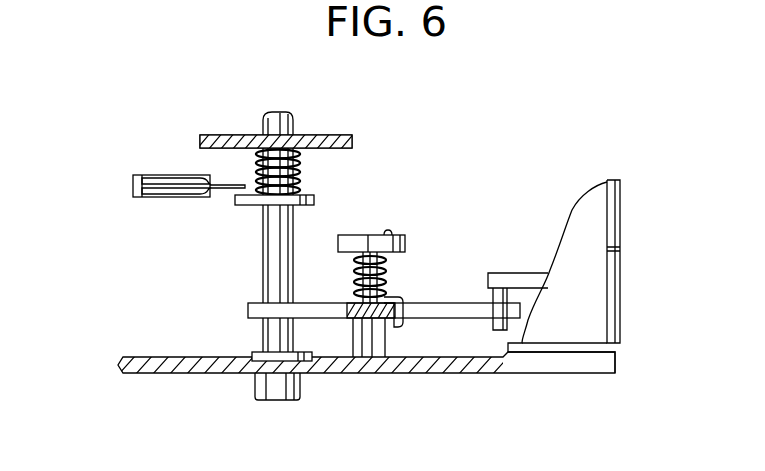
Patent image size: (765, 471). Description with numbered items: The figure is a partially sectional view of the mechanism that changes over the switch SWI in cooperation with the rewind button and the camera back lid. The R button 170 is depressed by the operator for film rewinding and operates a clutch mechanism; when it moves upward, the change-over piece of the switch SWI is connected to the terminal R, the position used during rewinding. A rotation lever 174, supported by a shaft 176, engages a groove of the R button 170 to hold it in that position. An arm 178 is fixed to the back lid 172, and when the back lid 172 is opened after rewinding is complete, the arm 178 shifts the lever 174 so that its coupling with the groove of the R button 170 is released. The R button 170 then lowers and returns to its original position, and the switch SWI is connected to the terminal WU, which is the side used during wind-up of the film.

The rewind button (R button) 170 is at (277, 392).
The back lid 172 is at (598, 214).
The rotation lever 174 is at (248, 311).
The shaft 176 is at (385, 300).
The arm 178 is at (505, 280).
The switch SW1 SWI is at (126, 185).
The terminal WU is at (165, 197).
The terminal R is at (165, 170).